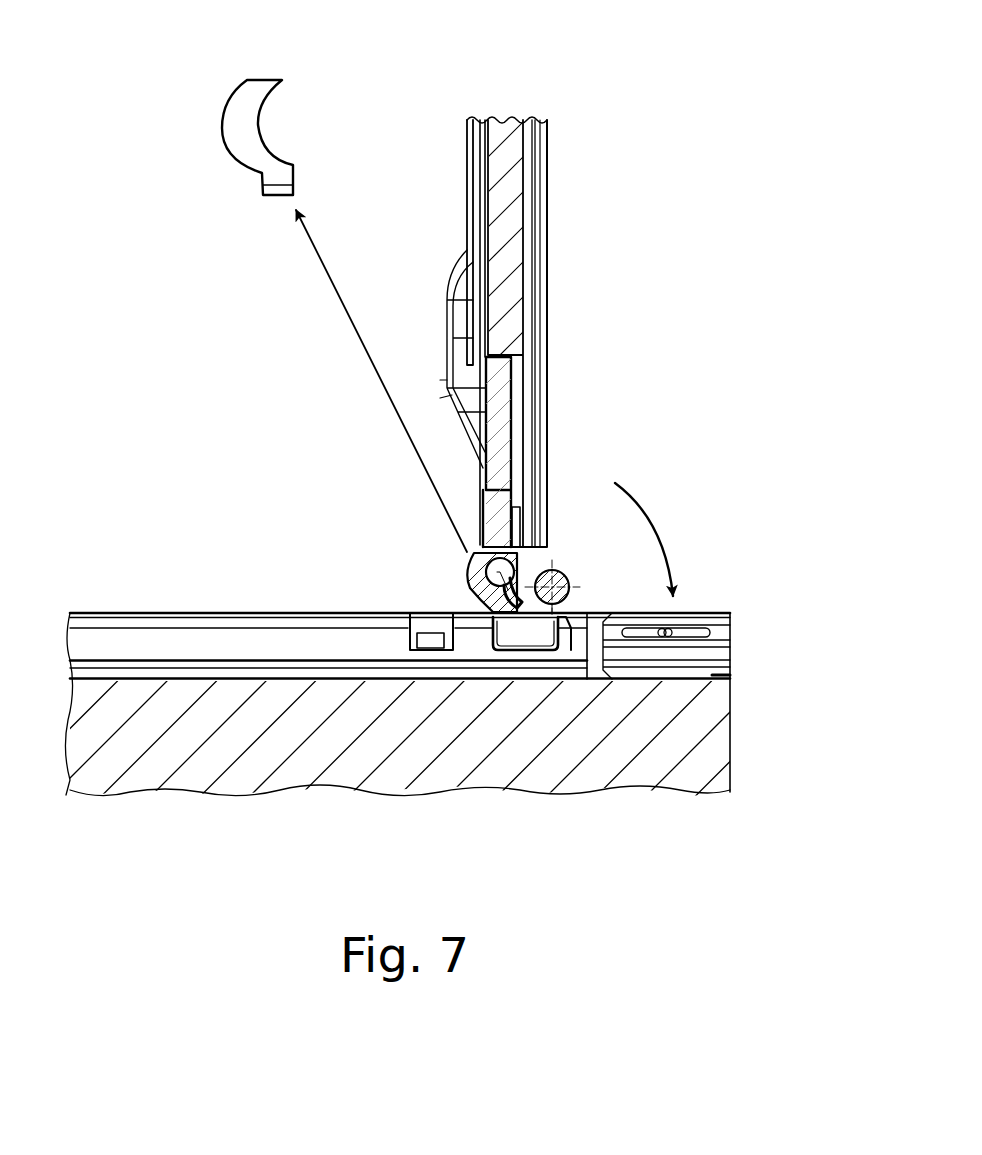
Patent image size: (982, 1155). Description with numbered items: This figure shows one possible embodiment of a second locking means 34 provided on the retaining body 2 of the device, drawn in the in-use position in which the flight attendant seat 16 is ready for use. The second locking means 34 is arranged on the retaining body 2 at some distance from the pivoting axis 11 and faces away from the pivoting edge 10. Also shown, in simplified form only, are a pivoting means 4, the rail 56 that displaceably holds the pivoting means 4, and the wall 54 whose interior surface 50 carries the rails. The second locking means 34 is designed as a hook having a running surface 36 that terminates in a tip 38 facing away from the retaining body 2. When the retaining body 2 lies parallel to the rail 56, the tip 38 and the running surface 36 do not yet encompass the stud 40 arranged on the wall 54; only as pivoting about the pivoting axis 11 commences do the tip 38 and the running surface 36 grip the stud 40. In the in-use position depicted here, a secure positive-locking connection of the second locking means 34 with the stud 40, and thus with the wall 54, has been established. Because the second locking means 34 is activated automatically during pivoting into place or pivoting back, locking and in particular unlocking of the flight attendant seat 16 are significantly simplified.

The retaining body 2 is at (178, 620).
The pivoting means 4 is at (566, 598).
The pivoting edge 10 is at (735, 640).
The pivoting axis 11 is at (562, 579).
The flight attendant seat 16 is at (385, 790).
The second locking means 34 is at (472, 566).
The running surface 36 is at (276, 95).
The tip 38 is at (498, 546).
The stud 40 is at (505, 563).
The interior surface 50 is at (557, 292).
The wall 54 is at (508, 198).
The rail 56 is at (541, 136).